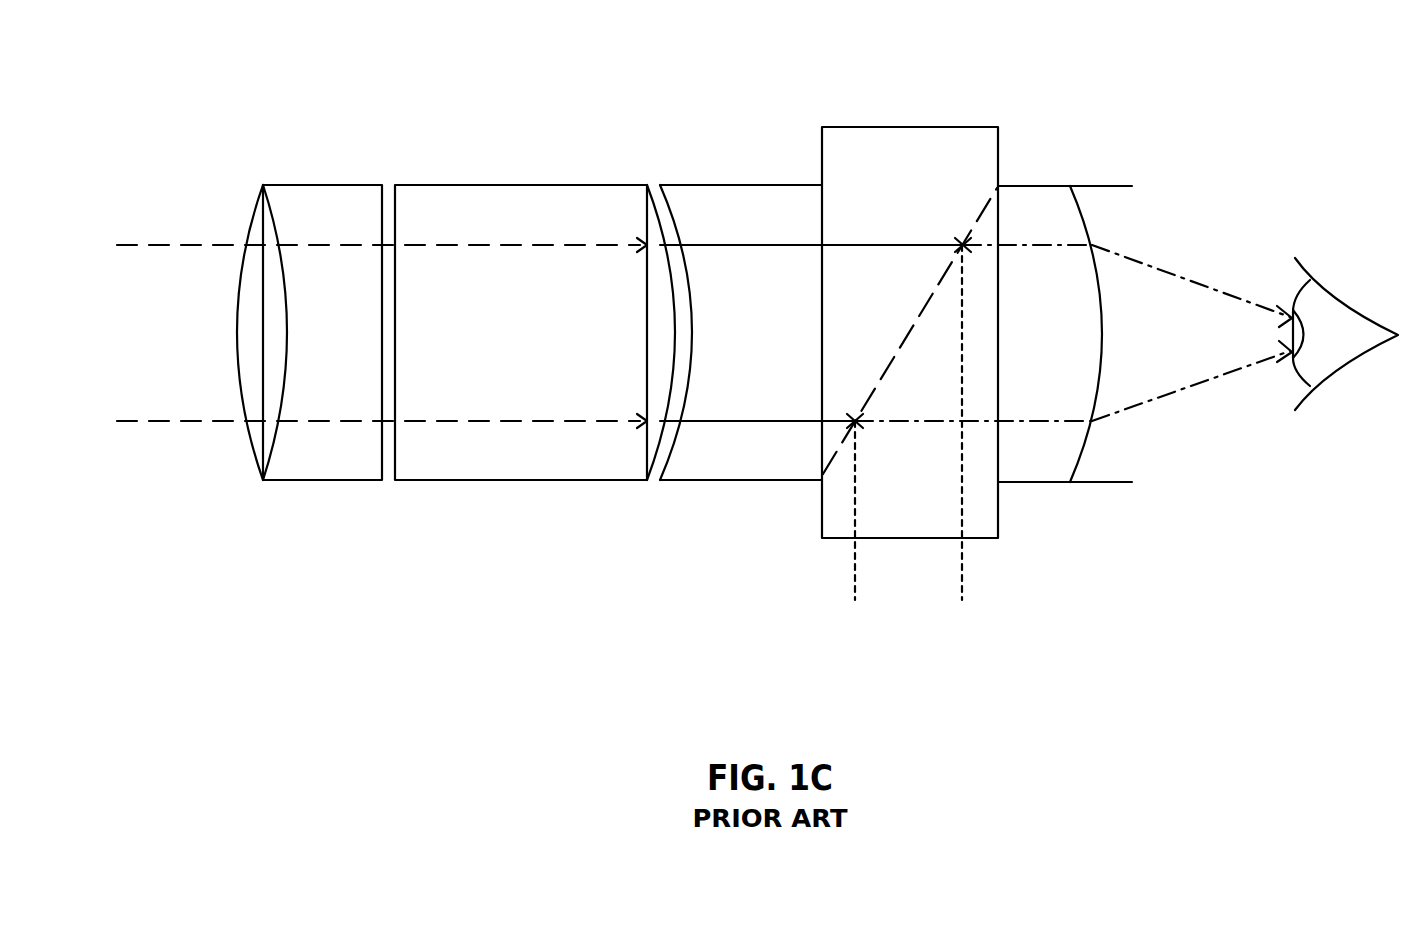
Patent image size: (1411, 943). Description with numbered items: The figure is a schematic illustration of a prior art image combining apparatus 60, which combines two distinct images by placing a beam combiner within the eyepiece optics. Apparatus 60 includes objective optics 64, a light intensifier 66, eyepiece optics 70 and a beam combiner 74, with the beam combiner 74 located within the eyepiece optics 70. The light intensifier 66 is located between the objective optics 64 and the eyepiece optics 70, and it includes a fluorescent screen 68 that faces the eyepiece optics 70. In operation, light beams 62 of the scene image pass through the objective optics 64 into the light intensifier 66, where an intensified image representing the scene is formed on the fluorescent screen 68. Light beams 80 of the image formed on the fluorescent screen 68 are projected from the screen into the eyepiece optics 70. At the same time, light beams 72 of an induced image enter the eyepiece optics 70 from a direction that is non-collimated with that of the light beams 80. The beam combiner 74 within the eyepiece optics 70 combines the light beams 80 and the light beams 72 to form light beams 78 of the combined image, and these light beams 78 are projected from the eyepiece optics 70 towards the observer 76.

The image combining apparatus 60 is at (518, 598).
The light beams 62 is at (188, 247).
The objective optics 64 is at (337, 480).
The light intensifier 66 is at (515, 480).
The fluorescent screen 68 is at (652, 437).
The eyepiece optics 70 is at (782, 480).
The light beams 72 is at (850, 570).
The beam combiner 74 is at (897, 125).
The observer 76 is at (1353, 357).
The light beams 78 is at (1043, 243).
The light beams 80 is at (702, 243).